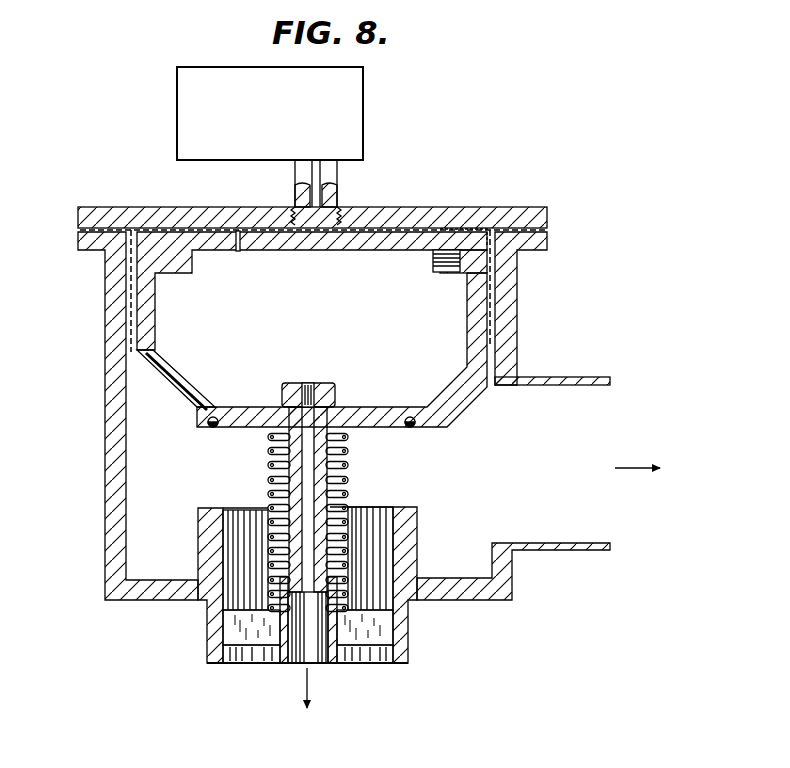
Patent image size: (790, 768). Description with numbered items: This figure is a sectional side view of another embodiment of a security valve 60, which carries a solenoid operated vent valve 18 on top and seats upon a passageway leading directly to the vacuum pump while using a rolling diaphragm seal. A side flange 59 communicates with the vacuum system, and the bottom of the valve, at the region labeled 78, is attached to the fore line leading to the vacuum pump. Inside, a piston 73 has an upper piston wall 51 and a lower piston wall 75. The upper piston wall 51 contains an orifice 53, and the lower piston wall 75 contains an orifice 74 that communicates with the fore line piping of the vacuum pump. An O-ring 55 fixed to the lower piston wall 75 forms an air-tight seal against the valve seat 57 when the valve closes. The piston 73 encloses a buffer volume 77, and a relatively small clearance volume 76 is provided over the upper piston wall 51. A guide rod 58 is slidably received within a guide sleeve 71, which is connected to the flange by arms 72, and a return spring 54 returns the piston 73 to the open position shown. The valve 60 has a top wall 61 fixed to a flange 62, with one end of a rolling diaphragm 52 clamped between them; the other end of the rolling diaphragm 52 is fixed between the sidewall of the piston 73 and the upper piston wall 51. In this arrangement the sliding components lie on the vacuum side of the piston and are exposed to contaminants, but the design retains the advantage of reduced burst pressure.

The solenoid operated vent valve 18 is at (176, 113).
The upper piston wall 51 is at (322, 252).
The rolling diaphragm 52 is at (120, 314).
The orifice 53 is at (238, 251).
The return spring 54 is at (268, 470).
The O-ring 55 is at (208, 434).
The valve seat 57 is at (208, 508).
The guide rod 58 is at (288, 494).
The side flange 59 is at (593, 377).
The valve 60 is at (88, 433).
The top wall 61 is at (420, 206).
The flange 62 is at (77, 243).
The guide sleeve 71 is at (340, 657).
The arms 72 is at (228, 626).
The piston 73 is at (143, 385).
The orifice 74 is at (305, 381).
The lower piston wall 75 is at (240, 405).
The clearance volume 76 is at (470, 227).
The buffer volume 77 is at (371, 267).
The bottom plate 78 is at (208, 651).